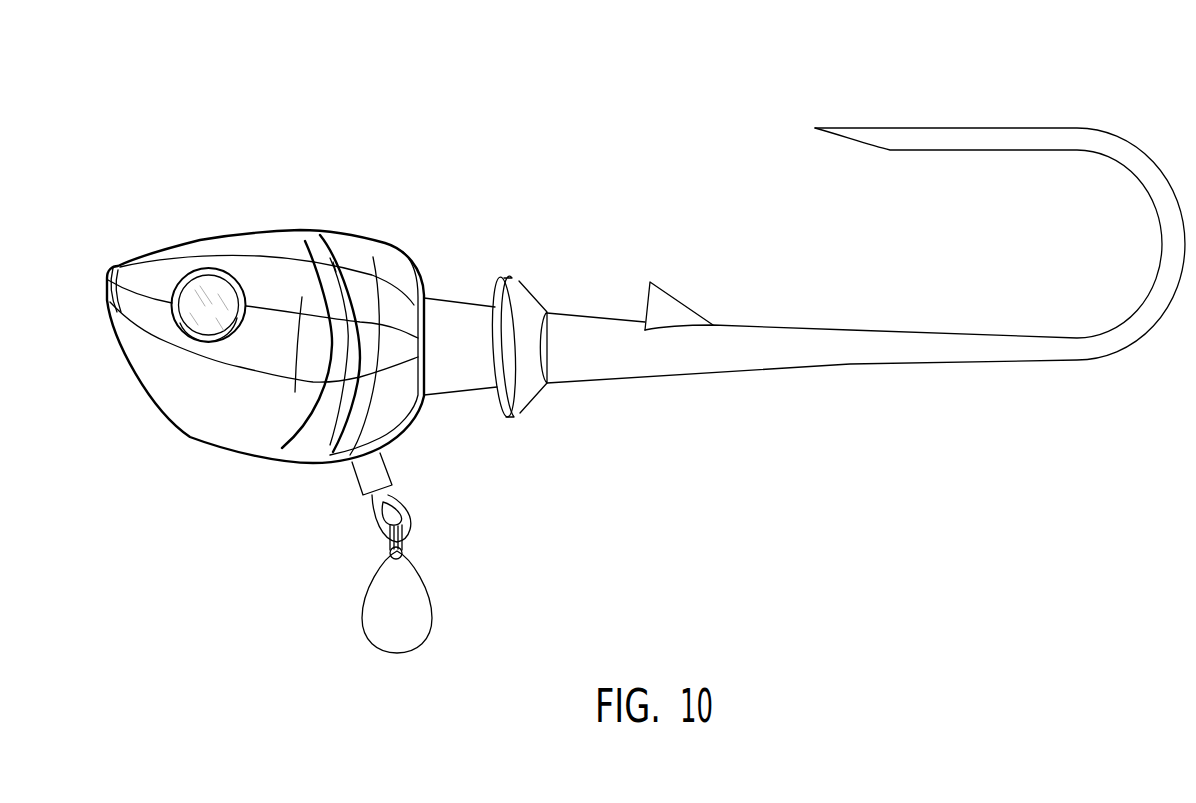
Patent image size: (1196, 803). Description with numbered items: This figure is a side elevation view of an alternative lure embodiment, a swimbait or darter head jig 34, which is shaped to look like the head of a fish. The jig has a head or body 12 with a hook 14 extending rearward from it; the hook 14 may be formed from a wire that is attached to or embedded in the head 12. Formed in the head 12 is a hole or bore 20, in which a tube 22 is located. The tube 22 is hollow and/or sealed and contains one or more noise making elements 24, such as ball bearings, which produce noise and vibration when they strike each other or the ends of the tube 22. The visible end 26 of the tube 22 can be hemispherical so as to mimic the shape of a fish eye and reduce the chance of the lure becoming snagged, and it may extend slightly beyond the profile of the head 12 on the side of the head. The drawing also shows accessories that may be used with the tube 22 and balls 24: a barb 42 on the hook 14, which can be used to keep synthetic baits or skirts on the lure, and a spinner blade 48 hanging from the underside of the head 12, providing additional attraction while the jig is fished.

The swimbait or darter head jig 34 is at (362, 105).
The head or body 12 is at (408, 250).
The hook 14 is at (872, 128).
The hole or bore 20 is at (226, 288).
The tube 22 is at (220, 340).
The noise making elements 24 is at (199, 294).
The end of the tube 26 is at (177, 315).
The barb 42 is at (673, 295).
The spinner blade 48 is at (433, 603).